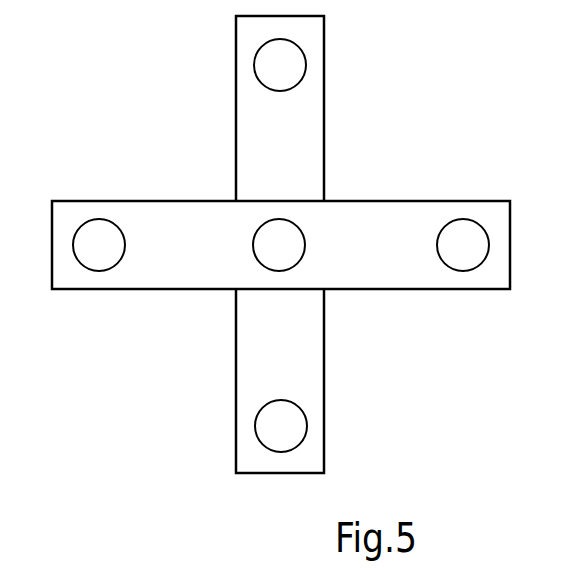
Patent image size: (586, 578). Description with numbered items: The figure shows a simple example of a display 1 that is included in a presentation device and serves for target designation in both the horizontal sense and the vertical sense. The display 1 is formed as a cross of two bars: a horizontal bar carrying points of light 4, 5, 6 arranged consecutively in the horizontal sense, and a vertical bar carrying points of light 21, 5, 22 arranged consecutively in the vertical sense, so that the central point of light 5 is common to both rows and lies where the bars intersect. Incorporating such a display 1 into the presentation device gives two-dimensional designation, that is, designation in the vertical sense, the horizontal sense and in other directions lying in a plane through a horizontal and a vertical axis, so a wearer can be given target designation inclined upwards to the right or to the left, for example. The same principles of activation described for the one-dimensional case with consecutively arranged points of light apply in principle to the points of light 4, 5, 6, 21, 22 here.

The display 1 is at (456, 408).
The point of light 4 is at (101, 250).
The point of light 5 is at (283, 247).
The point of light 6 is at (464, 252).
The point of light 21 is at (288, 67).
The point of light 22 is at (290, 428).